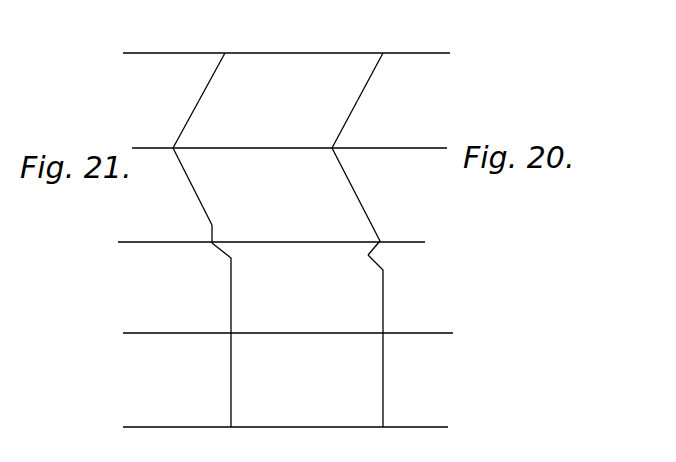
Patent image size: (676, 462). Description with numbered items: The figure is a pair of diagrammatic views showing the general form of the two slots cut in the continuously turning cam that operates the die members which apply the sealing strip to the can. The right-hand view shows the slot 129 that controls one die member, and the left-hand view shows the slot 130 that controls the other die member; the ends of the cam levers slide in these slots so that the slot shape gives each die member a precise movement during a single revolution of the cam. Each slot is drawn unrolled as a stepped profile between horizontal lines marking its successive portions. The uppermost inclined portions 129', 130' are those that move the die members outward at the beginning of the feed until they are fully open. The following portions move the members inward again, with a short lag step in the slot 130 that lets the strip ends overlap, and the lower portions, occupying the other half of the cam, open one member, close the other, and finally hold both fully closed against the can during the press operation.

In FIG. 21, the slot 130 is at (218, 62).
In FIG. 21, the portion of slot 130 130' is at (224, 120).
In FIG. 20, the slot 129 is at (383, 62).
In FIG. 20, the portion of slot 129 129' is at (380, 120).